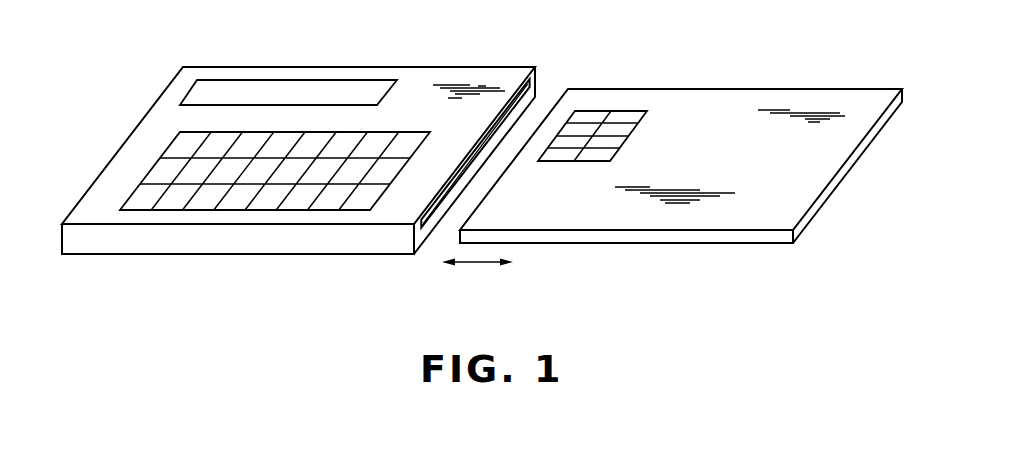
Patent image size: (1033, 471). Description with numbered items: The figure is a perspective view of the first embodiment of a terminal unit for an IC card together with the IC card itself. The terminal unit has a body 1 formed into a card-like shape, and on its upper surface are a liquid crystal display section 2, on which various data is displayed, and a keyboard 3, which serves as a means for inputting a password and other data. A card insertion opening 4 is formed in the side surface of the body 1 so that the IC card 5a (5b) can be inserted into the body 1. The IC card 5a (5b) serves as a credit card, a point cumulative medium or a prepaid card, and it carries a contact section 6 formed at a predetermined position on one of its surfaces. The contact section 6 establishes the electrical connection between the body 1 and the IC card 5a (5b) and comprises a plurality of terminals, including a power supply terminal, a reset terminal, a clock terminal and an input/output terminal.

The body 1 is at (441, 67).
The liquid crystal display section 2 is at (281, 92).
The keyboard 3 is at (267, 200).
The card insertion opening 4 is at (514, 107).
The IC card 5a is at (681, 131).
The IC card 5b is at (768, 89).
The contact section 6 is at (628, 111).